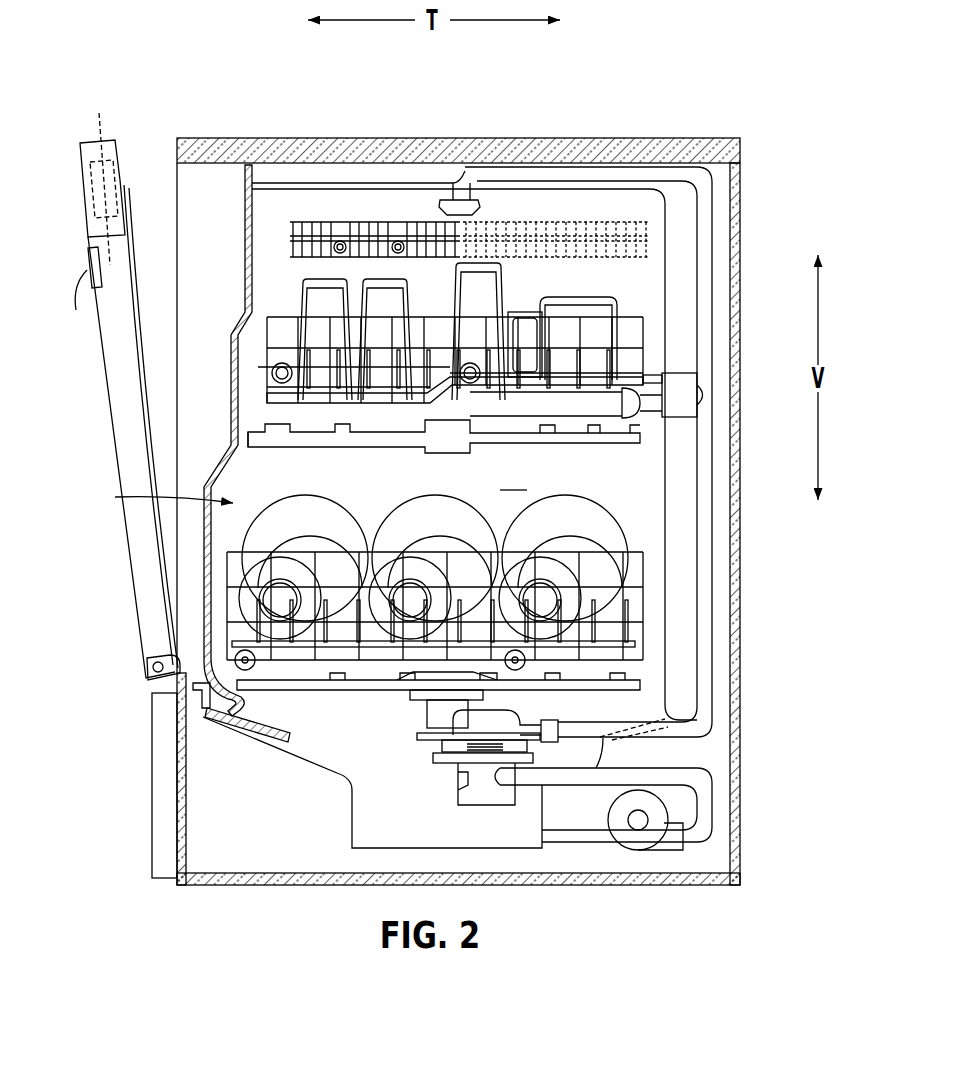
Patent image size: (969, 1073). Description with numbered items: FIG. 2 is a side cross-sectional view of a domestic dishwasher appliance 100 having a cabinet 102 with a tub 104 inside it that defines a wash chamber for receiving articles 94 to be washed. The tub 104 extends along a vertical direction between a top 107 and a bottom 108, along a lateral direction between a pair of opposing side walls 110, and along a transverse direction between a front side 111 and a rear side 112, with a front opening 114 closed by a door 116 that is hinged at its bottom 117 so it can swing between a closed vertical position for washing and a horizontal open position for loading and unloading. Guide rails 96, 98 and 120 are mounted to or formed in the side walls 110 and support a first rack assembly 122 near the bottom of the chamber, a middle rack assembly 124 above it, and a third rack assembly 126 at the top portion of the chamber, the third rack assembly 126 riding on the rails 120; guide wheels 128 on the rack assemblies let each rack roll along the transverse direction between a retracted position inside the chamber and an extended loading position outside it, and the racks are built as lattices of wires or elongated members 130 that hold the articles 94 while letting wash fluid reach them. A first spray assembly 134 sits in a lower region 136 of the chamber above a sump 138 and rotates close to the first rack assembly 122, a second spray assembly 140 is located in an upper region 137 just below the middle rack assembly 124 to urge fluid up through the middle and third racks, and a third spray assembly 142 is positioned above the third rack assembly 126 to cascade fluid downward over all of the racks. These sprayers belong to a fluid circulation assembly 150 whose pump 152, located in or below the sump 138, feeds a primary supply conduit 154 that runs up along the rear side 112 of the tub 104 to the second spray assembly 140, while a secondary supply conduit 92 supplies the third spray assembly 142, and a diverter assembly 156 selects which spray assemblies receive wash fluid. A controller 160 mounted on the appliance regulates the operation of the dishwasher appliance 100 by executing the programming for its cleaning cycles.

The secondary supply conduit 92 is at (662, 176).
The articles 94 is at (444, 440).
The guide rail 96 is at (208, 687).
The guide rail 98 is at (262, 388).
The dishwasher appliance 100 is at (610, 85).
The cabinet 102 is at (472, 509).
The tub 104 is at (128, 807).
The top 107 is at (396, 194).
The bottom 108 is at (262, 716).
The side walls 110 is at (336, 203).
The front side 111 is at (248, 197).
The rear side 112 is at (658, 344).
The front opening 114 is at (193, 182).
The door 116 is at (132, 582).
The bottom 117 is at (143, 674).
The guide rail 120 is at (642, 270).
The first rack assembly 122 is at (590, 545).
The middle rack assembly 124 is at (260, 327).
The third rack assembly 126 is at (295, 218).
The guide wheels 128 is at (386, 253).
The elongated members 130 is at (391, 550).
The first spray assembly 134 is at (320, 690).
The lower region 136 is at (650, 661).
The upper region 137 is at (657, 311).
The sump 138 is at (247, 728).
The second spray assembly 140 is at (546, 440).
The third spray assembly 142 is at (482, 209).
The fluid circulation assembly 150 is at (717, 714).
The pump 152 is at (650, 842).
The primary supply conduit 154 is at (717, 529).
The diverter assembly 156 is at (466, 785).
The controller 160 is at (100, 175).